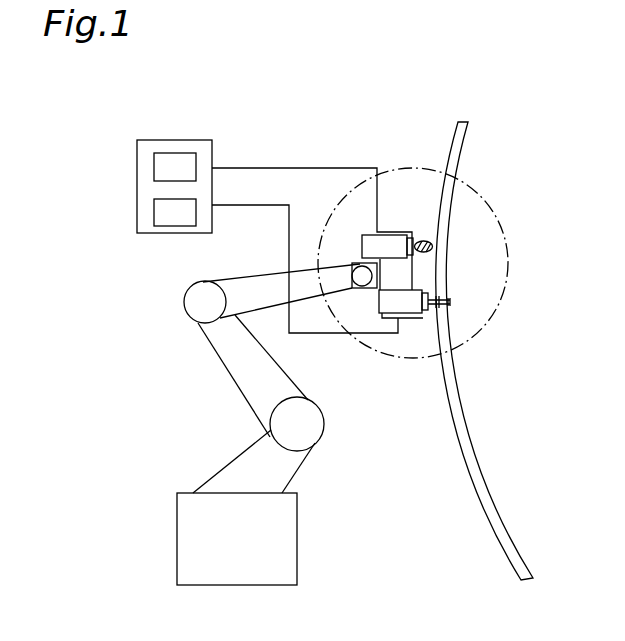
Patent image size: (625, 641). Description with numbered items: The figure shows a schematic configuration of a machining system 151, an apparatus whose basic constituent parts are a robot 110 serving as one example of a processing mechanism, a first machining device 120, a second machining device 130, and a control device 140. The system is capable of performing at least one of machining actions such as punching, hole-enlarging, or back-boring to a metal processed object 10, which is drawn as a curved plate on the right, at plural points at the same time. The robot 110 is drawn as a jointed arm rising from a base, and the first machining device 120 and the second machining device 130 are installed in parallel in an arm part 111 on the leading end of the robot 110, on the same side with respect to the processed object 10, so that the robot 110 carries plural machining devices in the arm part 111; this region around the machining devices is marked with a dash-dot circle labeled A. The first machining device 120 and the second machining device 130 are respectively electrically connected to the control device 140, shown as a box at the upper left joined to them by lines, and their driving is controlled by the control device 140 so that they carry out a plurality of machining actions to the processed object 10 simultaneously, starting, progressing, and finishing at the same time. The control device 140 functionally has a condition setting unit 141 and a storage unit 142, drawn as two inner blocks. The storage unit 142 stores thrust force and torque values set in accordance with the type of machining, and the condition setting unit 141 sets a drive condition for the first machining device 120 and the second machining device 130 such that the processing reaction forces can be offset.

The processed object 10 is at (480, 462).
The robot 110 is at (231, 456).
The arm part 111 is at (392, 275).
The first machining device 120 is at (389, 230).
The second machining device 130 is at (408, 321).
The control device 140 is at (134, 188).
The condition setting unit 141 is at (177, 153).
The storage unit 142 is at (158, 227).
The machining system 151 is at (147, 369).
The region A is at (510, 236).